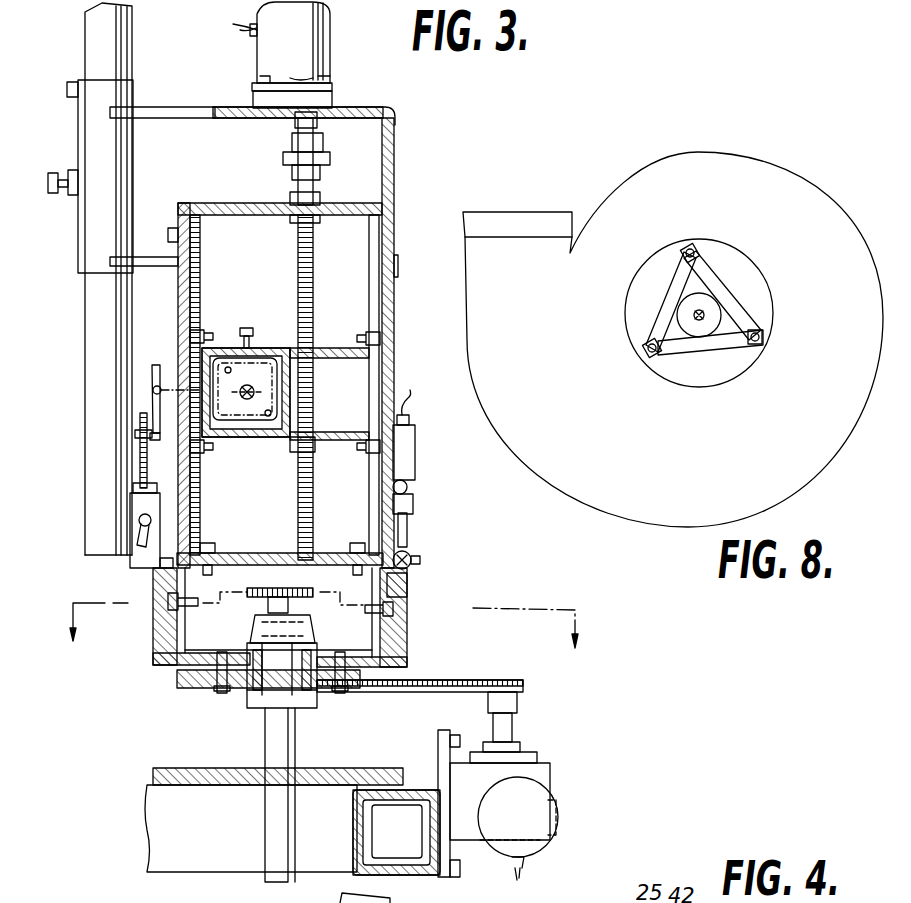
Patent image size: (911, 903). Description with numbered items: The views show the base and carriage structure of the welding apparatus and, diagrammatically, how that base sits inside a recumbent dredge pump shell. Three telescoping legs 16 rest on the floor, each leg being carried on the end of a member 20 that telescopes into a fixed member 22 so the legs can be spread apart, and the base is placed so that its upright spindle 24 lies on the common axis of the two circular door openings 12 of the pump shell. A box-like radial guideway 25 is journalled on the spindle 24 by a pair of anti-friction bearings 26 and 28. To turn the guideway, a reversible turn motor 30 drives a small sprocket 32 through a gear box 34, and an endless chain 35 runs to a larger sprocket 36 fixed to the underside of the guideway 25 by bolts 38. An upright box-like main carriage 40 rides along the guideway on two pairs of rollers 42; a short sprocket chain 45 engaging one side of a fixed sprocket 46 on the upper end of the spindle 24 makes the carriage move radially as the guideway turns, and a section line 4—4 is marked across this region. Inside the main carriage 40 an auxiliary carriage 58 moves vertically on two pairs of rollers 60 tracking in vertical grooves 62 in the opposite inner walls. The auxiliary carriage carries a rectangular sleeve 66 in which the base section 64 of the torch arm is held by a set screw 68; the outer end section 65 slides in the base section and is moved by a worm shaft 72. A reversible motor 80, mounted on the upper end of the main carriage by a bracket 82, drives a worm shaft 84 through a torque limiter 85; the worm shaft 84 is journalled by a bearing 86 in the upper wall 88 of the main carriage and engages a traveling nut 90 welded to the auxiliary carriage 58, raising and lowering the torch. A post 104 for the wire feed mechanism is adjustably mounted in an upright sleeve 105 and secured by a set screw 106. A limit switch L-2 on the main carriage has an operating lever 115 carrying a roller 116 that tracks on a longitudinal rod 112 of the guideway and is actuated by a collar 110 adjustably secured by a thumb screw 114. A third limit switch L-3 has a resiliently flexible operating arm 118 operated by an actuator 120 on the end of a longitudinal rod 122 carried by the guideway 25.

In FIG. 3, the post 104 is at (94, 40).
In FIG. 3, the upright sleeve 105 is at (117, 141).
In FIG. 3, the set screw 106 is at (52, 171).
In FIG. 3, the reversible motor 80 is at (327, 58).
In FIG. 3, the bracket 82 is at (369, 109).
In FIG. 3, the torque limiter 85 is at (292, 154).
In FIG. 3, the bearing 86 is at (322, 198).
In FIG. 3, the upper wall 88 is at (222, 190).
In FIG. 3, the worm shaft 84 is at (298, 245).
In FIG. 3, the vertical grooves 62 is at (207, 255).
In FIG. 3, the main carriage 40 is at (394, 292).
In FIG. 3, the base section 64 is at (232, 432).
In FIG. 3, the sleeve 66 is at (270, 352).
In FIG. 3, the worm shaft 72 is at (252, 400).
In FIG. 3, the end section 65 is at (245, 418).
In FIG. 3, the set screw 68 is at (246, 328).
In FIG. 3, the auxiliary carriage 58 is at (322, 348).
In FIG. 3, the traveling nut 90 is at (316, 448).
In FIG. 3, the rollers 60 is at (190, 337).
In FIG. 3, the longitudinal rod 122 is at (154, 376).
In FIG. 3, the actuator 120 is at (150, 398).
In FIG. 3, the operating arm 118 is at (140, 449).
In FIG. 3, the third limit switch L-3 is at (130, 566).
In FIG. 3, the sprocket chain 45 is at (252, 580).
In FIG. 3, the limit switch L-2 is at (416, 468).
In FIG. 3, the operating lever 115 is at (410, 491).
In FIG. 3, the roller 116 is at (408, 532).
In FIG. 3, the collar 110 is at (411, 564).
In FIG. 3, the thumb screws 114 is at (421, 560).
In FIG. 3, the longitudinal rod 112 is at (400, 580).
In FIG. 3, the radial guideway 25 is at (407, 650).
In FIG. 3, the rollers 42 is at (167, 598).
In FIG. 3, the section line 4- 4 is at (318, 620).
In FIG. 3, the fixed sprocket 46 is at (300, 597).
In FIG. 3, the anti-friction bearing 26 is at (251, 623).
In FIG. 3, the anti-friction bearing 28 is at (262, 706).
In FIG. 3, the upright spindle 24 is at (268, 745).
In FIG. 8, the upright spindle 24 is at (705, 313).
In FIG. 3, the bolts 38 is at (345, 696).
In FIG. 3, the larger sprocket 36 is at (360, 685).
In FIG. 3, the sprocket 32 is at (524, 687).
In FIG. 3, the endless chain 35 is at (455, 693).
In FIG. 3, the gear box 34 is at (550, 770).
In FIG. 3, the reversible motor 30 is at (552, 796).
In FIG. 3, the fixed member 22 is at (360, 842).
In FIG. 8, the fixed member 22 is at (682, 288).
In FIG. 3, the member 20 is at (397, 858).
In FIG. 8, the door opening 12 is at (691, 382).
In FIG. 8, the legs 16 is at (696, 250).